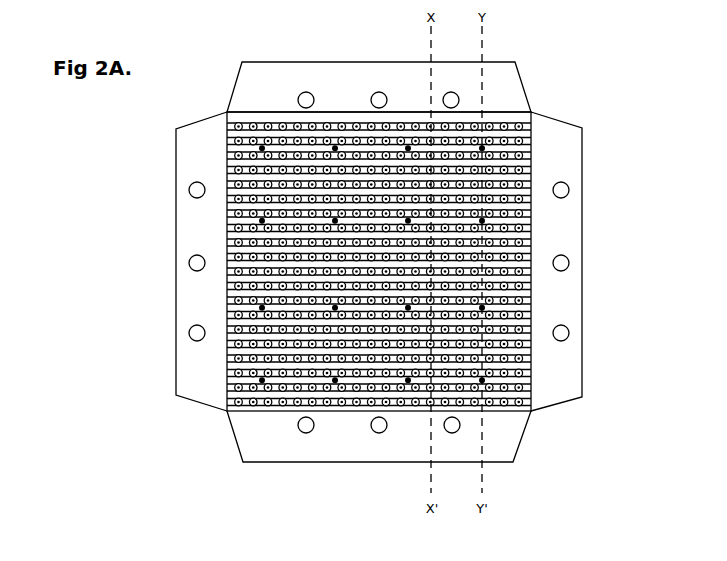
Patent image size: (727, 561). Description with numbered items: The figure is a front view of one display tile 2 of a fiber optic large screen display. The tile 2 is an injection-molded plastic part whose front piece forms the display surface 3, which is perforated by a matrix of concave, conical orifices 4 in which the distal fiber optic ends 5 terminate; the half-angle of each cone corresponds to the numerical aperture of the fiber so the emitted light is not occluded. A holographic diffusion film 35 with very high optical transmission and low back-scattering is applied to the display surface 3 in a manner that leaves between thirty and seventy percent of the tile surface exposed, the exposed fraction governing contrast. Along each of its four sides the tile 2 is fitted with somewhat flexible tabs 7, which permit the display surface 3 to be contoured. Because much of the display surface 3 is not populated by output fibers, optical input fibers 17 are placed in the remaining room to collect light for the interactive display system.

The display tile 2 is at (408, 246).
The display surface 3 is at (418, 244).
The conical orifice 4 is at (341, 121).
The distal fiber optic end 5 is at (267, 122).
The tab 7 is at (557, 384).
The optical input fiber 17 is at (489, 146).
The holographic diffusion film 35 is at (532, 226).